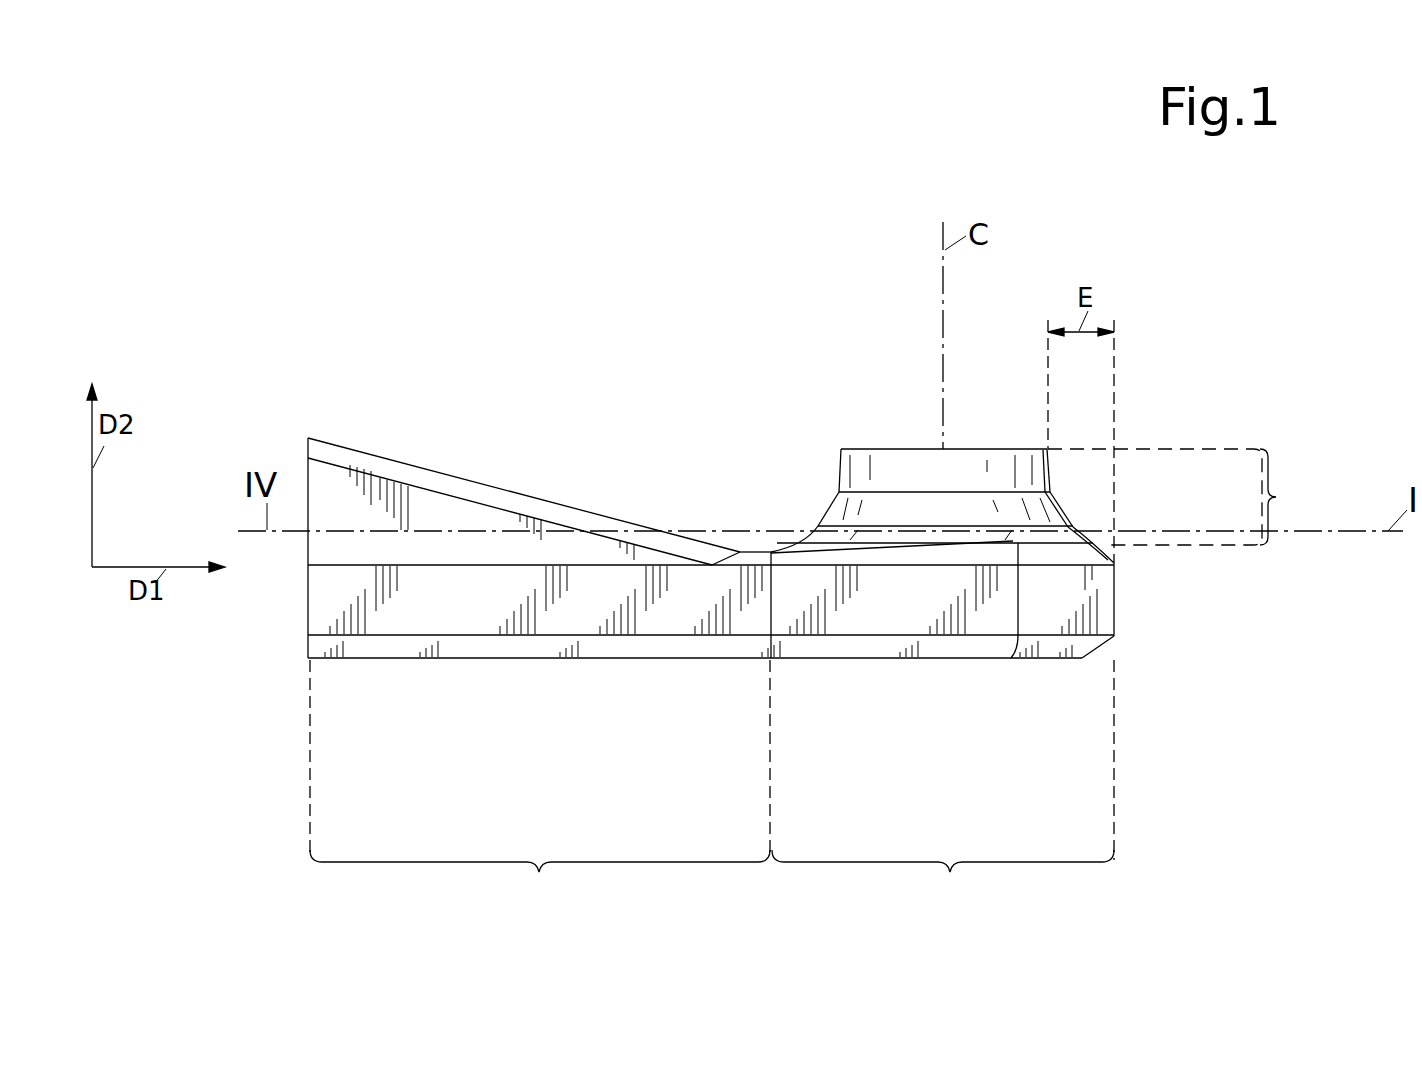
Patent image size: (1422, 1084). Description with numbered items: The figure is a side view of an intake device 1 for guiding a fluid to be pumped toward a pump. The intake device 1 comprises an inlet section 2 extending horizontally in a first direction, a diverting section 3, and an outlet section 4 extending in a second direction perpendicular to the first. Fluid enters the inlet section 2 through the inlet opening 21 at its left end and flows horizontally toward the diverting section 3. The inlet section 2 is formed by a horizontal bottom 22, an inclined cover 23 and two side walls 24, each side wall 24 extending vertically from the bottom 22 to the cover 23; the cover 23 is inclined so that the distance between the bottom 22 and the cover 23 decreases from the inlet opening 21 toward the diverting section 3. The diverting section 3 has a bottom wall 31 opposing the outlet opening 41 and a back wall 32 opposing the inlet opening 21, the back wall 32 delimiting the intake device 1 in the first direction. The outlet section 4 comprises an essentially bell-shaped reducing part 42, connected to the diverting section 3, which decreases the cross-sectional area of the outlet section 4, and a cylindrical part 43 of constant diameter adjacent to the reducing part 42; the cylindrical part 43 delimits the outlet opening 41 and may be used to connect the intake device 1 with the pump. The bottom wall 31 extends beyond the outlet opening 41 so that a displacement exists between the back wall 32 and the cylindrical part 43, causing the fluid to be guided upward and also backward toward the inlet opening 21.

The intake device 1 is at (1222, 285).
The inlet section 2 is at (540, 789).
The diverting section 3 is at (943, 789).
The outlet section 4 is at (1175, 497).
The inlet opening 21 is at (307, 605).
The bottom 22 is at (592, 660).
The cover 23 is at (481, 483).
The side walls 24 is at (420, 622).
The bottom wall 31 is at (950, 660).
The back wall 32 is at (1117, 598).
The outlet opening 41 is at (887, 448).
The reducing part 42 is at (805, 498).
The cylindrical part 43 is at (838, 460).